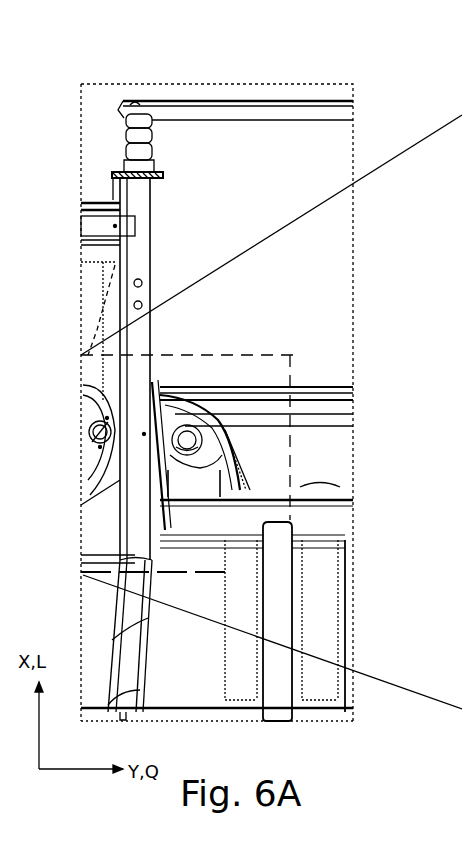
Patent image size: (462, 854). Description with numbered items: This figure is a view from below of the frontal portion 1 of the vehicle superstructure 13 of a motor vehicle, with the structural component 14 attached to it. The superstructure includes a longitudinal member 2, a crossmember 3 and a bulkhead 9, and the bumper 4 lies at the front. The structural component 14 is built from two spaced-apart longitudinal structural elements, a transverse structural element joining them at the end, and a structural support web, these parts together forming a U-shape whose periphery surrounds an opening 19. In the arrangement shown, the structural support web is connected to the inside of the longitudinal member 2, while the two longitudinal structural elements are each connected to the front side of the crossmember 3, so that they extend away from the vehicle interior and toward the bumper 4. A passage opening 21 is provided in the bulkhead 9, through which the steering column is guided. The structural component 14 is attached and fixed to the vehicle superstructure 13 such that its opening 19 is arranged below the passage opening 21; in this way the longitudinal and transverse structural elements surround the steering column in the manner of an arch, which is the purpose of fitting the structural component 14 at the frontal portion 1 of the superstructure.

The frontal portion 1 is at (328, 90).
The longitudinal member 2 is at (153, 250).
The crossmember 3 is at (335, 522).
The bumper 4 is at (244, 99).
The bulkhead 9 is at (335, 443).
The vehicle superstructure 13 is at (237, 177).
The structural component 14 is at (228, 409).
The opening 19 is at (203, 500).
The passage opening 21 is at (187, 440).